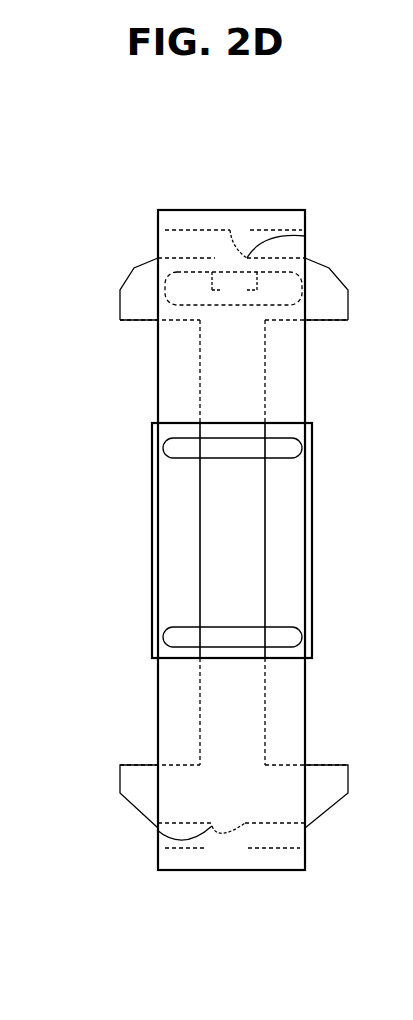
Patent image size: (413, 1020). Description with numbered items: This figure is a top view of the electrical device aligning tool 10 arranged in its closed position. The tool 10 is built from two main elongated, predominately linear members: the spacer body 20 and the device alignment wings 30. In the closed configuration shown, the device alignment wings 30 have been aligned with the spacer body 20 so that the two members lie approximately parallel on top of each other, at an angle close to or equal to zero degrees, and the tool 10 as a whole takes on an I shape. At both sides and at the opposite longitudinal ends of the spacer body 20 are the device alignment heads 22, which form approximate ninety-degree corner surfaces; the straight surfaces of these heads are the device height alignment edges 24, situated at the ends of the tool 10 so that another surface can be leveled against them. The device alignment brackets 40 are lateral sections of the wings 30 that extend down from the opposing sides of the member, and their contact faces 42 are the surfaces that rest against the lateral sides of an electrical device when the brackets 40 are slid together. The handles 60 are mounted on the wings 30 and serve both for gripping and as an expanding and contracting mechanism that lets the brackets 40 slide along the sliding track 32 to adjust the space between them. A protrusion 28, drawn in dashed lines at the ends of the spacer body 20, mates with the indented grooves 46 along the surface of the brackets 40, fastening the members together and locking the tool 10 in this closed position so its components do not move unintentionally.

The electrical device aligning tool 10 is at (218, 136).
The spacer body 20 is at (200, 393).
The device alignment heads 22 is at (120, 305).
The device height alignment edges 24 is at (314, 320).
The protrusion 28 is at (305, 236).
The device alignment wings 30 is at (306, 396).
The sliding track 32 is at (152, 590).
The device alignment brackets 40 is at (283, 210).
The contact faces 42 is at (183, 233).
The indented grooves 46 is at (230, 230).
The handles 60 is at (301, 457).